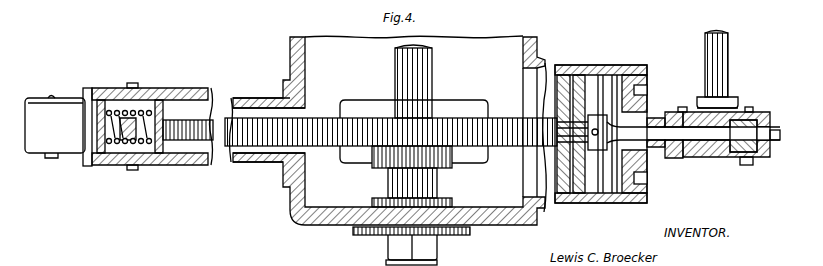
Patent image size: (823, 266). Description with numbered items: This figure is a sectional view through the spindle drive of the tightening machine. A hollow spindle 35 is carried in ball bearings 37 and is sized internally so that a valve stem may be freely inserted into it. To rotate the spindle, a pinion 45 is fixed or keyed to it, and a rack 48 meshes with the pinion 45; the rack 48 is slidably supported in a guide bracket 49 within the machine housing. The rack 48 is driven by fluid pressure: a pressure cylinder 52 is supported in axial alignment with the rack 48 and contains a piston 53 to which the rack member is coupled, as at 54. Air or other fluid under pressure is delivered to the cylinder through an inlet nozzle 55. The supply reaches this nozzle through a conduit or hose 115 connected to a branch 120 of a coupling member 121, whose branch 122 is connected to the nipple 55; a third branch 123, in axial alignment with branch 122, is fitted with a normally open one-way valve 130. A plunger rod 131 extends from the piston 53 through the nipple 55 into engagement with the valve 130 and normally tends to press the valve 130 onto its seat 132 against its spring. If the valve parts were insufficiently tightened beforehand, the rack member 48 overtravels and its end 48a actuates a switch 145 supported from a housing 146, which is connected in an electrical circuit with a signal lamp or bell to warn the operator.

The hollow spindle 35 is at (432, 66).
The ball bearings 37 is at (448, 198).
The pinion 45 is at (450, 125).
The rack 48 is at (315, 118).
The end of rack member 48a is at (150, 150).
The guide bracket 49 is at (453, 112).
The pressure cylinder 52 is at (564, 66).
The piston 53 is at (580, 92).
The coupling of rack to piston 54 is at (543, 145).
The inlet nozzle 55 is at (655, 118).
The conduit or hose 115 is at (729, 50).
The branch of coupling member 120 is at (733, 99).
The coupling member 121 is at (720, 158).
The branch of coupling member 122 is at (683, 160).
The third branch of coupling member 123 is at (743, 165).
The one-way valve 130 is at (745, 115).
The plunger rod 131 is at (665, 142).
The valve seat 132 is at (765, 155).
The switch 145 is at (60, 110).
The housing 146 is at (232, 102).